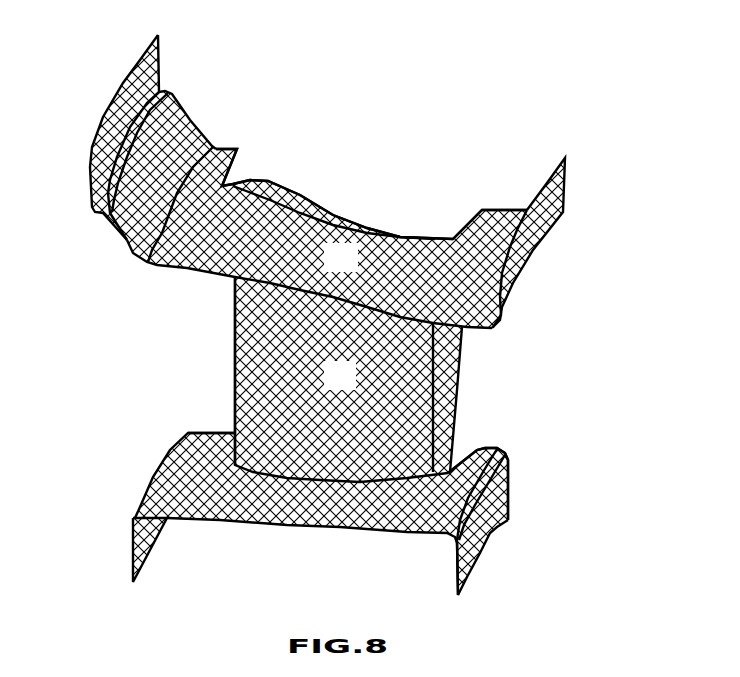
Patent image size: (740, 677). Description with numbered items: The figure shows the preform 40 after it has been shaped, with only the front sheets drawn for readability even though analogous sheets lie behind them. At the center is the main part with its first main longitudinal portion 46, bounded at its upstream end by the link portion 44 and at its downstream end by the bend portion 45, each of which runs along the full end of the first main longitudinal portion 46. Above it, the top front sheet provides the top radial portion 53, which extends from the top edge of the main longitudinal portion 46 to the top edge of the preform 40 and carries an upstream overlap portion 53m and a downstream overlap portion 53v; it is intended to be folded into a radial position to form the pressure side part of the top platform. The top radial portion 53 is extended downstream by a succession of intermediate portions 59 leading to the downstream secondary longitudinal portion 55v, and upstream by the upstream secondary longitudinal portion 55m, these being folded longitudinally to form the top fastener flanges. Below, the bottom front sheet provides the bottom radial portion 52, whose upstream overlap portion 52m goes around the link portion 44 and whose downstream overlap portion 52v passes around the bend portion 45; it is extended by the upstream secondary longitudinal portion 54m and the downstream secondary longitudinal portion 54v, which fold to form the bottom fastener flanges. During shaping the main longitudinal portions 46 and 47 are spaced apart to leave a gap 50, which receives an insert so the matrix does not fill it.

The preform 40 is at (553, 113).
The link portion 44 is at (460, 362).
The bend portion 45 is at (235, 353).
The first main longitudinal portion 46 is at (352, 387).
The main longitudinal portion 47 is at (340, 222).
The gap 50 is at (278, 192).
The bottom radial portion 52 is at (283, 523).
The downstream overlap portion 52v is at (203, 433).
The upstream overlap portion 52m is at (487, 447).
The top radial portion 53 is at (354, 269).
The downstream overlap portion 53v is at (230, 150).
The upstream overlap portion 53m is at (497, 216).
The downstream secondary longitudinal portion 54v is at (155, 545).
The upstream secondary longitudinal portion 54m is at (497, 528).
The downstream secondary longitudinal portion 55v is at (127, 76).
The upstream secondary longitudinal portion 55m is at (567, 183).
The intermediate portions 59 is at (178, 123).